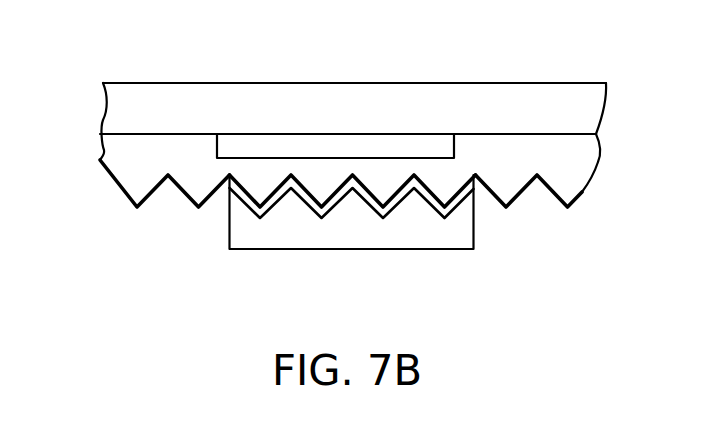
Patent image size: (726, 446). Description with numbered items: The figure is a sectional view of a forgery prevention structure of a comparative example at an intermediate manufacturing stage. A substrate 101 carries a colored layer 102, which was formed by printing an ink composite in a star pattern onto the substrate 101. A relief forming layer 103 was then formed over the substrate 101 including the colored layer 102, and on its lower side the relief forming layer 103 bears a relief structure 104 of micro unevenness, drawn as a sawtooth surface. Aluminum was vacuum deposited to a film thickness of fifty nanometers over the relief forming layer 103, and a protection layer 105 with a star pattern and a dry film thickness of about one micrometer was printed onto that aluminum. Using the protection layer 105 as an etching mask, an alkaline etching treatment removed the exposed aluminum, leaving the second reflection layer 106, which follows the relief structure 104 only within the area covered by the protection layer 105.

The substrate 101 is at (583, 110).
The colored layer 102 is at (433, 150).
The relief forming layer 103 is at (580, 160).
The relief structure 104 is at (133, 185).
The protection layer 105 is at (433, 237).
The second reflection layer 106 is at (450, 213).